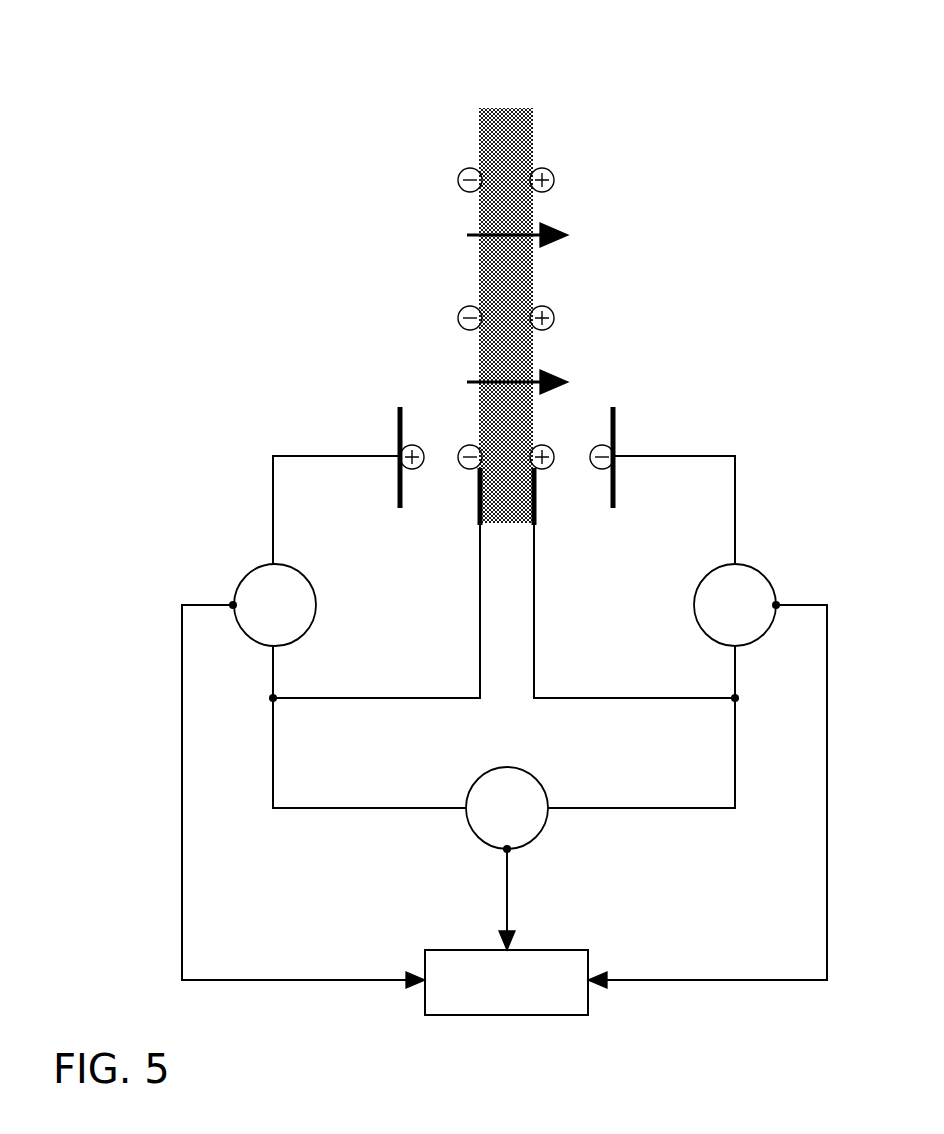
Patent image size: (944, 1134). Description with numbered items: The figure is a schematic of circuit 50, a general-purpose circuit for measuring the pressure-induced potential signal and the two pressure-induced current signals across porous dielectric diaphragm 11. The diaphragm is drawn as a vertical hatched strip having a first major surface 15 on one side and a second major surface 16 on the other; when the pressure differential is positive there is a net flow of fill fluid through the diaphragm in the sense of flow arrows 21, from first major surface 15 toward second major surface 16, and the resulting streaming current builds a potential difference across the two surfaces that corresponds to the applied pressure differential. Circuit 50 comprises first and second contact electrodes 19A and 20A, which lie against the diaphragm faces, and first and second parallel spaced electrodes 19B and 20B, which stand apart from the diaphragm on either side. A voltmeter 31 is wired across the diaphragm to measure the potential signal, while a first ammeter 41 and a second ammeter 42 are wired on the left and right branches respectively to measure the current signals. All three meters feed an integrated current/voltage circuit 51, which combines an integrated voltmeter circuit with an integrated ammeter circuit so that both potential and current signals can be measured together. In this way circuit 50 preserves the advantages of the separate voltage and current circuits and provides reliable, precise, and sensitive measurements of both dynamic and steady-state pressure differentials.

The circuit 50 is at (130, 111).
The porous dielectric diaphragm 11 is at (508, 128).
The first major surface 15 is at (479, 140).
The second major surface 16 is at (533, 140).
The flow arrows 21 is at (494, 307).
The first contact electrode 19A is at (478, 510).
The first parallel spaced electrode 19B is at (398, 413).
The second contact electrode 20A is at (542, 513).
The second parallel spaced electrode 20B is at (615, 412).
The first ammeter 41 is at (240, 575).
The second ammeter 42 is at (772, 577).
The voltmeter 31 is at (473, 835).
The integrated current/voltage circuit 51 is at (590, 950).